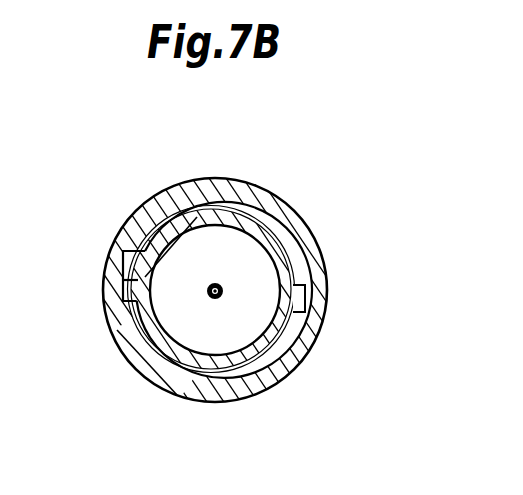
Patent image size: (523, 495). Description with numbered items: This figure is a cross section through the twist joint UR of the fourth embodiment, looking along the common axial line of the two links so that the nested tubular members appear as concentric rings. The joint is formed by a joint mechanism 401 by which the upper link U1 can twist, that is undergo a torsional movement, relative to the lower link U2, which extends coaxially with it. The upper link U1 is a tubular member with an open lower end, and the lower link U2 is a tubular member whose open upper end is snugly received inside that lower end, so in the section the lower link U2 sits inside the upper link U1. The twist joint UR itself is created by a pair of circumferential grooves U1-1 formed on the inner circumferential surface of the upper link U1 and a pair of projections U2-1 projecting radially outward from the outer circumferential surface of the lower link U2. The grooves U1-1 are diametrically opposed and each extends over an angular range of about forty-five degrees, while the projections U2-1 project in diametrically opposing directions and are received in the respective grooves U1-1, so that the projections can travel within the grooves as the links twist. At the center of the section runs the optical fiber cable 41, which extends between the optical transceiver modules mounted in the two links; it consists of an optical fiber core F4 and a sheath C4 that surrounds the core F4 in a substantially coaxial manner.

The joint mechanism 401 is at (219, 163).
The upper link U1 is at (140, 380).
The circumferential groove U1-1 is at (128, 311).
The lower link U2 is at (233, 218).
The projection U2-1 is at (125, 281).
The optical fiber cable 41 is at (220, 284).
The sheath C4 is at (222, 293).
The optical fiber core F4 is at (213, 298).
The twist joint UR is at (232, 425).